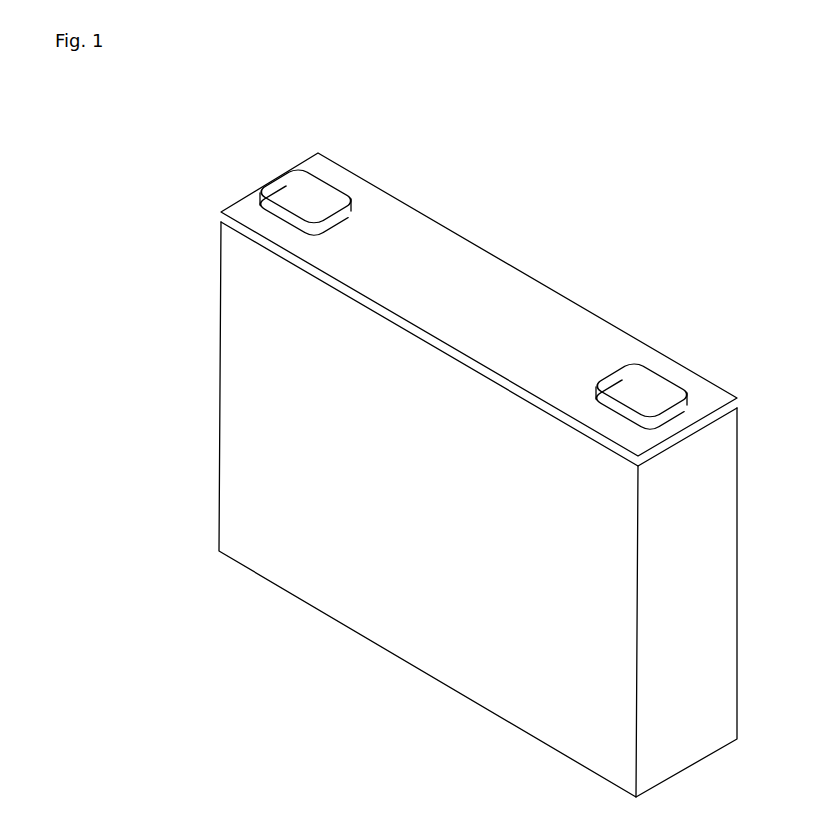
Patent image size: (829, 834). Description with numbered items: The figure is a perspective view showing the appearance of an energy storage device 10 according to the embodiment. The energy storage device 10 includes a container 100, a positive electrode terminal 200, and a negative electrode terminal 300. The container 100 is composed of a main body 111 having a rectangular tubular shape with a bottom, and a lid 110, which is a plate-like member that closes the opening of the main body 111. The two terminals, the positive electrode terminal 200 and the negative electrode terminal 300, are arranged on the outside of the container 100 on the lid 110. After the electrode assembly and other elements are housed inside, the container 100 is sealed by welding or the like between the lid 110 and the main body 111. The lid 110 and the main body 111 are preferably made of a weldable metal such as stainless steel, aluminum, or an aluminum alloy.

The energy storage device 10 is at (637, 163).
The container 100 is at (143, 331).
The lid 110 is at (383, 278).
The main body 111 is at (240, 388).
The positive electrode terminal 200 is at (653, 380).
The negative electrode terminal 300 is at (322, 190).